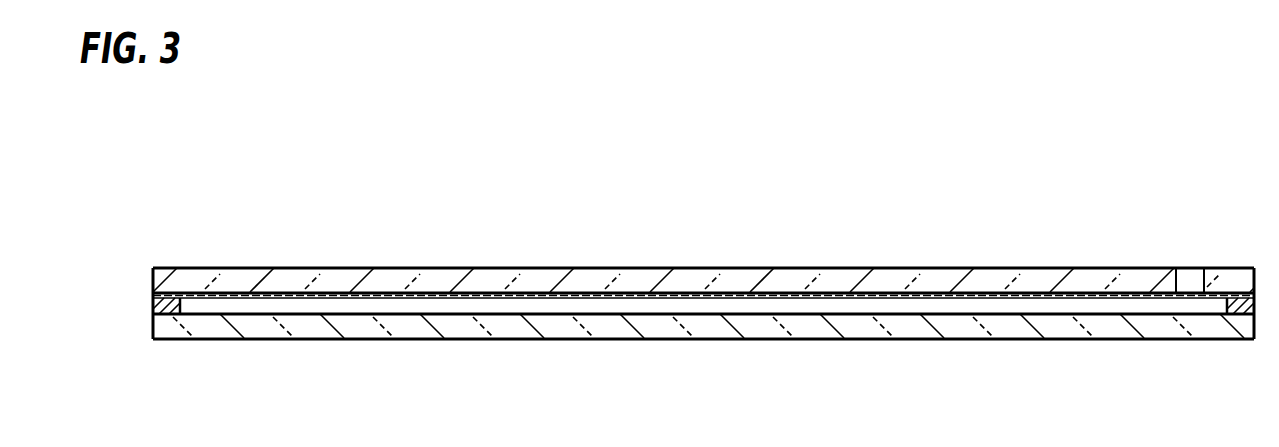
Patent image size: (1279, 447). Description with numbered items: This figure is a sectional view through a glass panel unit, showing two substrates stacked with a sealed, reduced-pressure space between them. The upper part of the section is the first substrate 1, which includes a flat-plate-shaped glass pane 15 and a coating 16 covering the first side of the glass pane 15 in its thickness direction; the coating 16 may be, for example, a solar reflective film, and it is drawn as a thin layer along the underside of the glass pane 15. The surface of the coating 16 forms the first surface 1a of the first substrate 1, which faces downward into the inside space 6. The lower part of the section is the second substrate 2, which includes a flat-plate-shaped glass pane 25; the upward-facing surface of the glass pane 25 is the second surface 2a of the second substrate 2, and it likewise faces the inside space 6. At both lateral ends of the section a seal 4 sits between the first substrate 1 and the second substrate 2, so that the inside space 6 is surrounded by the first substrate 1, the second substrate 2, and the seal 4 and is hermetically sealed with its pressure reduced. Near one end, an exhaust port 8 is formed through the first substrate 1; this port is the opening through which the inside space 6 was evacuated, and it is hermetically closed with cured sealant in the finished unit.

The first substrate 1 is at (703, 273).
The first surface 1a is at (735, 304).
The glass pane 15 is at (888, 278).
The coating 16 is at (790, 297).
The second substrate 2 is at (703, 345).
The second surface 2a is at (857, 307).
The glass pane 25 is at (920, 327).
The seal 4 is at (163, 307).
The inside space 6 is at (992, 305).
The exhaust port 8 is at (1190, 281).